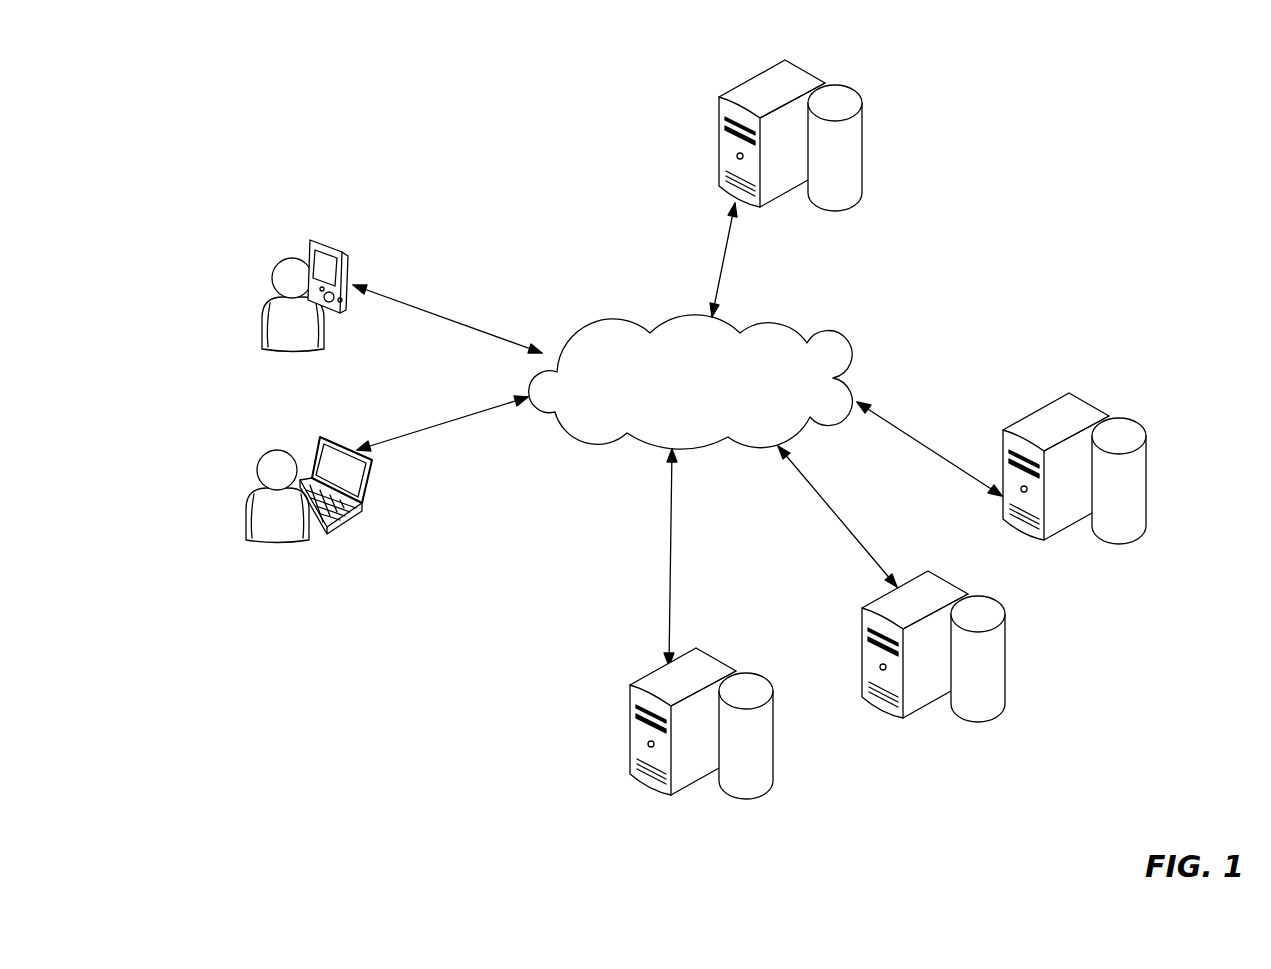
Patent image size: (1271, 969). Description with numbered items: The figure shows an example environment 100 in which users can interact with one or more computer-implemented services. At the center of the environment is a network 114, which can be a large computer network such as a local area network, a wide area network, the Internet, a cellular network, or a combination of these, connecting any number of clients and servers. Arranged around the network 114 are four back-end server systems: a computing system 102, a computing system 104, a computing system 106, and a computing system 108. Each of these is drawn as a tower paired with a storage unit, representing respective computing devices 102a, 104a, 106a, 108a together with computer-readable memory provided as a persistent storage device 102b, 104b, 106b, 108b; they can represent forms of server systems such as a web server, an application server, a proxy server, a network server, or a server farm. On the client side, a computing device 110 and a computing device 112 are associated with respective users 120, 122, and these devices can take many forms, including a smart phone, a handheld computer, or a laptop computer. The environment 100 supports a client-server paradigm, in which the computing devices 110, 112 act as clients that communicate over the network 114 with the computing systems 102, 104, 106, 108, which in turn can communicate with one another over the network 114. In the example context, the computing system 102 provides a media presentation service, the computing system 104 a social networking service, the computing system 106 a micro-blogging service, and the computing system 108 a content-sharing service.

The example environment 100 is at (1025, 166).
The computing system 102 is at (865, 78).
The computing device 102a is at (748, 82).
The persistent storage device 102b is at (862, 148).
The computing system 104 is at (1125, 395).
The computing device 104a is at (1040, 412).
The persistent storage device 104b is at (1146, 488).
The computing system 106 is at (1025, 629).
The computing device 106a is at (935, 573).
The persistent storage device 106b is at (1005, 682).
The computing system 108 is at (742, 649).
The computing device 108a is at (642, 678).
The persistent storage device 108b is at (775, 745).
The computing device 110 is at (328, 242).
The computing device 112 is at (332, 437).
The network 114 is at (678, 408).
The user 120 is at (280, 265).
The user 122 is at (262, 462).